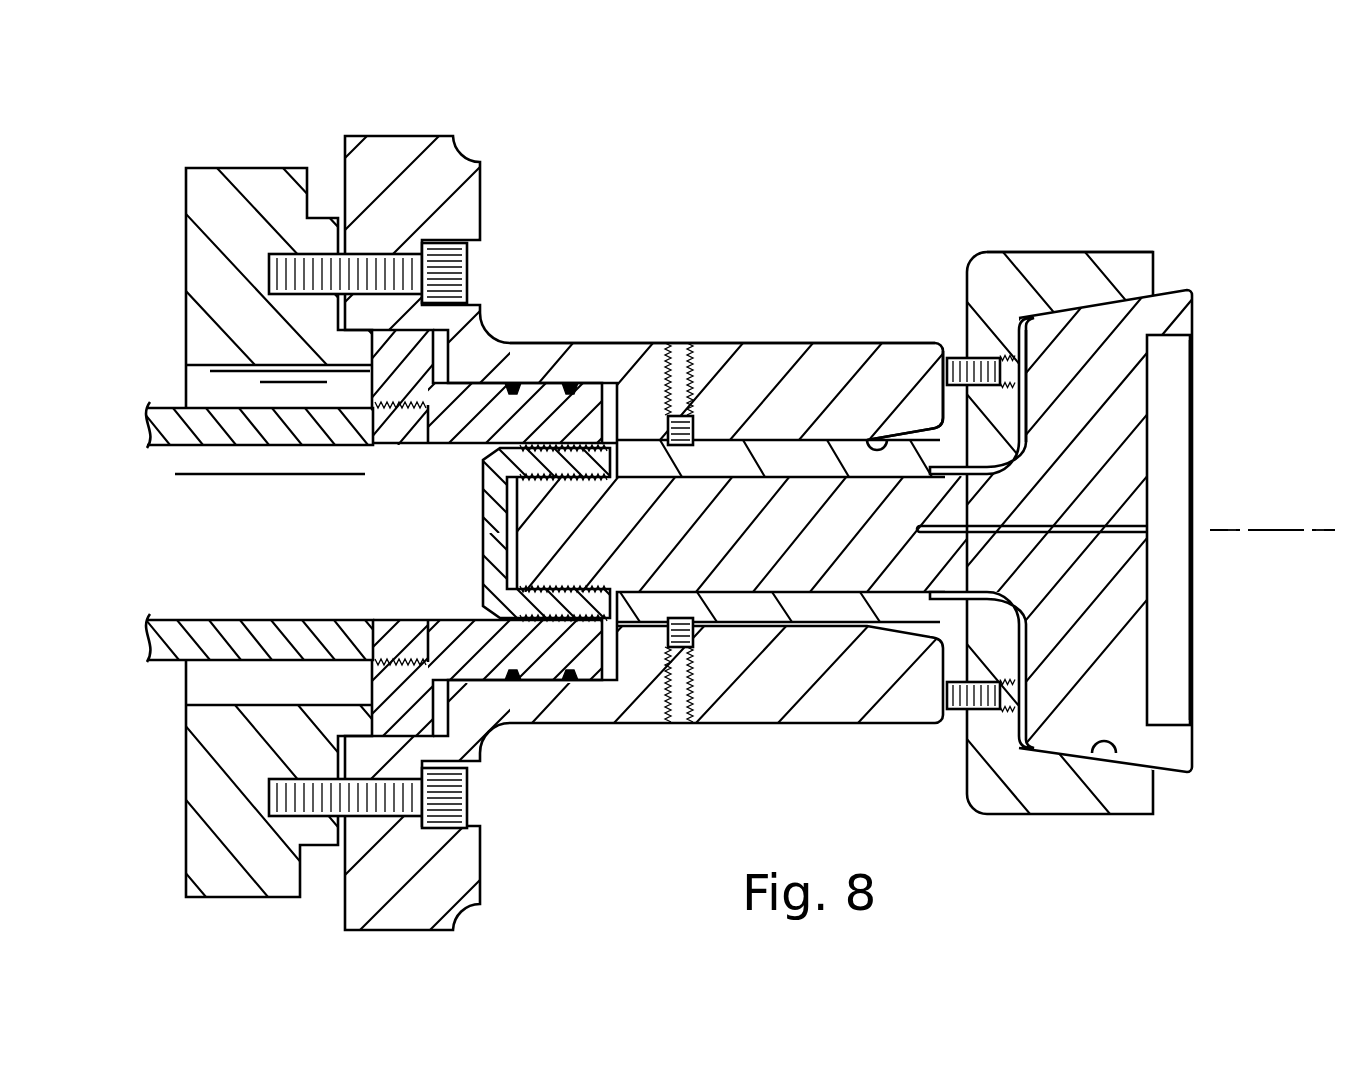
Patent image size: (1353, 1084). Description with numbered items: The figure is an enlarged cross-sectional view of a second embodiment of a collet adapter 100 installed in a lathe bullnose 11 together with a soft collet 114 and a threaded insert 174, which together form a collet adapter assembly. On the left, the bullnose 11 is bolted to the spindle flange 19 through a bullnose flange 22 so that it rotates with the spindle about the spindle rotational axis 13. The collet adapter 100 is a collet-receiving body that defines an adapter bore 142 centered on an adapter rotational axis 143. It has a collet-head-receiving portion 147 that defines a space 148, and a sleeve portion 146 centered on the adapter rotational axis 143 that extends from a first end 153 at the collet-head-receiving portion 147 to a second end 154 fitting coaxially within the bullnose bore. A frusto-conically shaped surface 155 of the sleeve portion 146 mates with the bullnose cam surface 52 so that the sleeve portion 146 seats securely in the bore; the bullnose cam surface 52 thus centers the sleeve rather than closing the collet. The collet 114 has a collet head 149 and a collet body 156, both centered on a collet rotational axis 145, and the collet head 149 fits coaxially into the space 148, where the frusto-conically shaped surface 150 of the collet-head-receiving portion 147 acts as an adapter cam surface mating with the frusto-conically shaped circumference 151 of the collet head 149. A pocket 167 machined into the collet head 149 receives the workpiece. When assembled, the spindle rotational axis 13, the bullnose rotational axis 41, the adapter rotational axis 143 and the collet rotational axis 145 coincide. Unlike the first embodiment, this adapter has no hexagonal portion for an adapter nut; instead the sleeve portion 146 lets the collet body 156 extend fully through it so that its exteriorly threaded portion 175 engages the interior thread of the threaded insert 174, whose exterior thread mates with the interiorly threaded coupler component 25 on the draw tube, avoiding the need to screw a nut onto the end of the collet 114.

The spindle flange 19 is at (283, 494).
The bullnose flange 22 is at (433, 533).
The interiorly threaded coupler component 25 is at (471, 510).
The second end 154 is at (647, 500).
The bullnose cam surface 52 is at (692, 381).
The frusto-conically shaped surface 155 is at (816, 345).
The bullnose 11 is at (722, 276).
The first end 153 is at (911, 340).
The collet adapter 100 is at (1020, 195).
The space 148 is at (995, 473).
The collet-head-receiving portion 147 is at (1057, 489).
The collet head 149 is at (969, 481).
The soft collet 114 is at (1213, 492).
The adapter bore 142 is at (1156, 386).
The pocket 167 is at (1230, 530).
The spindle rotational axis 13 is at (1272, 570).
The bullnose rotational axis 41 is at (1260, 588).
The adapter rotational axis 143 is at (1289, 604).
The collet rotational axis 145 is at (1303, 621).
The threaded insert 174 is at (549, 612).
The exteriorly threaded portion 175 is at (415, 595).
The collet body 156 is at (807, 636).
The sleeve portion 146 is at (692, 696).
The frusto-conically shaped surface 150 is at (1092, 809).
The frusto-conically shaped circumference 151 is at (1125, 794).